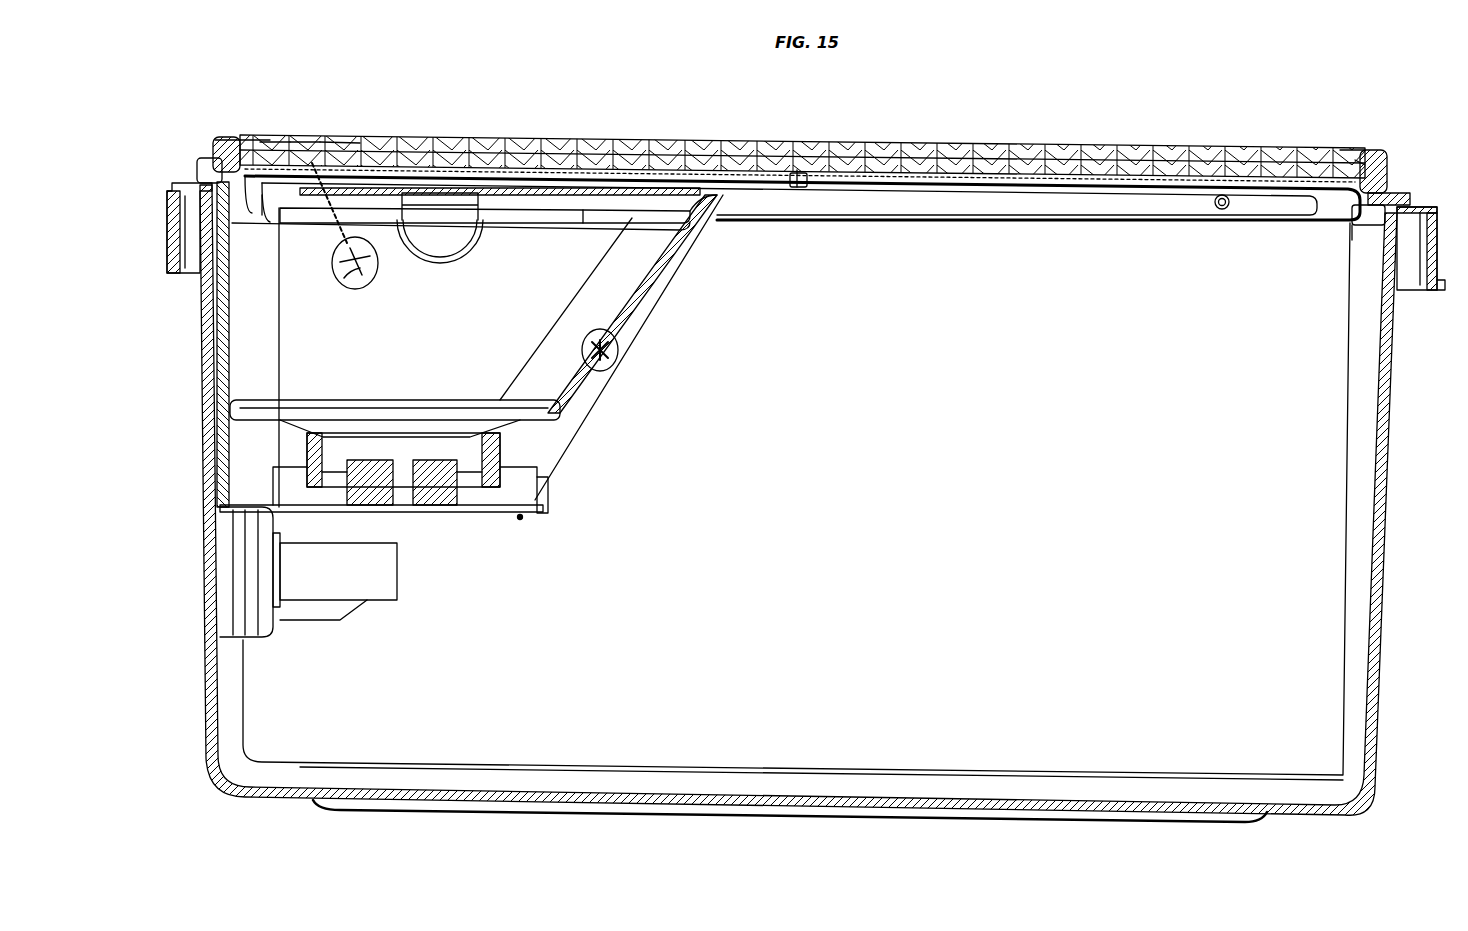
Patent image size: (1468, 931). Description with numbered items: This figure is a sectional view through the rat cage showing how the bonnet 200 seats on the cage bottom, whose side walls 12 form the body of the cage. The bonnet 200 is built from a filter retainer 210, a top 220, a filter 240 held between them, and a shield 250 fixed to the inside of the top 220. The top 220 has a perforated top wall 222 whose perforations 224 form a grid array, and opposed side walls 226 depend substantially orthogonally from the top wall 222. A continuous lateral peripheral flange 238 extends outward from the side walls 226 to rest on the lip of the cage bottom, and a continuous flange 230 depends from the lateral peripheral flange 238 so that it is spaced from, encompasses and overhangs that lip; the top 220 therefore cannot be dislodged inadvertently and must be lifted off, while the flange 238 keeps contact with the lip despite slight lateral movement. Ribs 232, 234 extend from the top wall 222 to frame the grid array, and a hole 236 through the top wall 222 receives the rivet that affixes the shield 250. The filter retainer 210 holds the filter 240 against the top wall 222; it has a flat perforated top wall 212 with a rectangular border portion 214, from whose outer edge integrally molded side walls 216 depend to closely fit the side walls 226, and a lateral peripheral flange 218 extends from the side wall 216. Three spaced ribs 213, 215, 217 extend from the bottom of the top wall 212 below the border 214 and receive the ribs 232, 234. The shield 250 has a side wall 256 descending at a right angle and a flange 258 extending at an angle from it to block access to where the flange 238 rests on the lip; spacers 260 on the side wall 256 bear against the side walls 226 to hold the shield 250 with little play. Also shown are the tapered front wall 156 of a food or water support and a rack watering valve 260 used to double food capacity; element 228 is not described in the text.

The side walls 12 is at (1380, 668).
The front wall 156 is at (610, 350).
The bonnet 200 is at (541, 82).
The filter retainer 210 is at (1183, 148).
The top wall 212 is at (802, 137).
The rib 213 is at (250, 140).
The border portion 214 is at (305, 132).
The rib 215 is at (270, 136).
The side walls 216 is at (215, 178).
The rib 217 is at (340, 142).
The lateral peripheral flange 218 is at (200, 280).
The top 220 is at (1437, 242).
The top wall 222 is at (1170, 198).
The perforations 224 is at (1105, 214).
The side walls 226 is at (237, 148).
The left hook bracket 228 is at (205, 190).
The flange 230 is at (176, 272).
The rib 232 is at (1345, 150).
The rib 234 is at (1365, 160).
The hole 236 is at (808, 187).
The lateral peripheral flange 238 is at (797, 190).
The filter 240 is at (856, 160).
The shield 250 is at (1264, 228).
The side wall 256 is at (280, 225).
The flange 258 is at (1368, 262).
The spacers 260 is at (1224, 210).